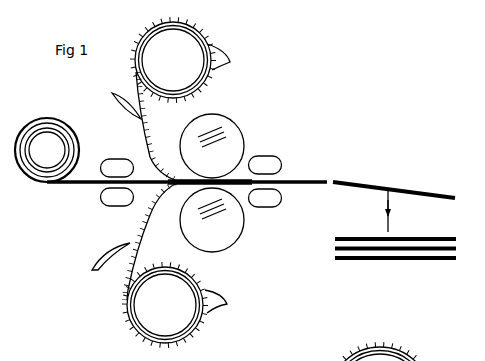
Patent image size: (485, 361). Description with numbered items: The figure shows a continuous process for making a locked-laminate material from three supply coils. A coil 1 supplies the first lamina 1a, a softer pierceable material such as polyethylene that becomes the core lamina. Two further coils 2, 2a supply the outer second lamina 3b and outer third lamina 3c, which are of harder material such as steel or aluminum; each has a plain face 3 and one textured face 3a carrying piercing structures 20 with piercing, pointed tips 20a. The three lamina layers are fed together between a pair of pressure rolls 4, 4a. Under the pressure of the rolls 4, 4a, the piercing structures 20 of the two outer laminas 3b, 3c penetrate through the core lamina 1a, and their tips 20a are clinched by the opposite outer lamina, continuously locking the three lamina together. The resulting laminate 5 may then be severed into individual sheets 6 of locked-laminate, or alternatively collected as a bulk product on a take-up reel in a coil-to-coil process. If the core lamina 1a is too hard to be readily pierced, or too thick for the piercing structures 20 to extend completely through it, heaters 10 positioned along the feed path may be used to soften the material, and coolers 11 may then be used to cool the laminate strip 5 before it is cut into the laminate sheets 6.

The coil 1 is at (47, 150).
The first lamina 1a is at (70, 190).
The coil 2 is at (173, 60).
The coil 2a is at (165, 305).
The plain face 3 is at (147, 114).
The textured face 3a is at (135, 132).
The second lamina 3b is at (218, 83).
The third lamina 3c is at (122, 317).
The pressure roll 4 is at (212, 146).
The pressure roll 4a is at (212, 220).
The laminate 5 is at (306, 190).
The sheets 6 is at (435, 236).
The heaters 10 is at (117, 182).
The coolers 11 is at (265, 181).
The piercing structures 20 is at (86, 273).
The pointed tips 20a is at (229, 178).